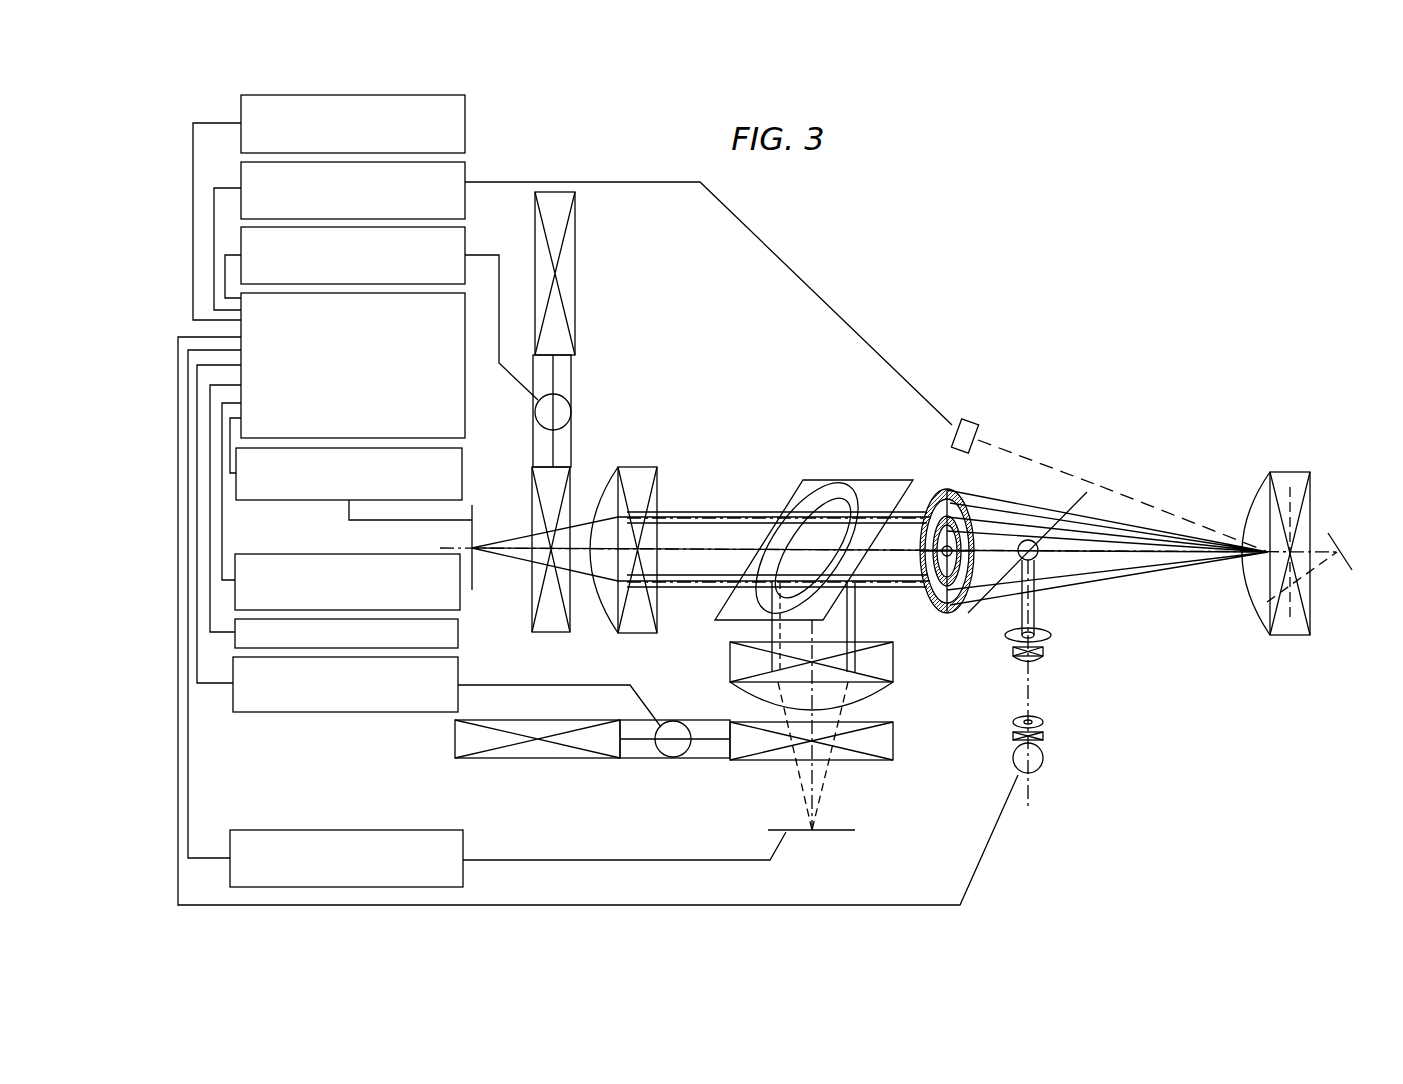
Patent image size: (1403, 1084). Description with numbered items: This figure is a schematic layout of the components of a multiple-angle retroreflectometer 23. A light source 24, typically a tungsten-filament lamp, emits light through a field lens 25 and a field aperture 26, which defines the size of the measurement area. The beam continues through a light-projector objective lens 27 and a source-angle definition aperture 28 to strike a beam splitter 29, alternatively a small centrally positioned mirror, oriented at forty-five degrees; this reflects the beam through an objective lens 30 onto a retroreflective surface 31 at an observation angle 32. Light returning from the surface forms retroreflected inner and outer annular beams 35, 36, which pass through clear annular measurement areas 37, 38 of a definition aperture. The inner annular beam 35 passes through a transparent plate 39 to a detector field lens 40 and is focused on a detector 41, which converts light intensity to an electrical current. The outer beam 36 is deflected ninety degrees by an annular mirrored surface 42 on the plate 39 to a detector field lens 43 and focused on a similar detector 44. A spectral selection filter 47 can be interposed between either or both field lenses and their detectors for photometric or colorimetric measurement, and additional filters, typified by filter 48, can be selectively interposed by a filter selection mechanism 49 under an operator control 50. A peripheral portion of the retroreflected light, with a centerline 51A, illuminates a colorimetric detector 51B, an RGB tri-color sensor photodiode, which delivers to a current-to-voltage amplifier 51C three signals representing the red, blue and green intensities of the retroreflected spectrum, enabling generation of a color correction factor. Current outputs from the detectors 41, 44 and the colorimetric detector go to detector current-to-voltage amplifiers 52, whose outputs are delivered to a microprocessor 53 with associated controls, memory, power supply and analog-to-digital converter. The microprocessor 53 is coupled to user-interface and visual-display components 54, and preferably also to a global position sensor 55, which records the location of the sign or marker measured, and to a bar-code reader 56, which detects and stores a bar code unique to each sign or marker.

The multiple-angle retroreflectometer 23 is at (935, 350).
The light source 24 is at (1045, 760).
The field lens 25 is at (1045, 736).
The field aperture 26 is at (1045, 720).
The light-projector objective lens 27 is at (1043, 658).
The source-angle definition aperture 28 is at (1052, 635).
The beam splitter 29 is at (1093, 485).
The objective lens 30 is at (1317, 487).
The retroreflective surface 31 is at (1330, 533).
The observation angle 32 is at (1277, 573).
The inner annular beam 35 is at (683, 508).
The outer annular beam 36 is at (1157, 527).
The clear annular measurement area 37 is at (953, 492).
The clear annular measurement area 38 is at (1003, 500).
The transparent plate 39 is at (825, 480).
The detector field lens 40 is at (640, 468).
The detector 41 is at (472, 578).
The annular mirrored surface 42 is at (835, 495).
The detector field lens 43 is at (893, 660).
The detector 44 is at (830, 832).
The spectral selection filter 47 is at (590, 470).
The filter 48 is at (575, 272).
The filter selection mechanism 49 is at (565, 398).
The operator control 50 is at (465, 241).
The centerline 51A is at (1013, 453).
The colorimetric detector 51B is at (970, 420).
The current-to-voltage amplifier 51C is at (465, 160).
The detector current-to-voltage amplifiers 52 is at (462, 478).
The microprocessor 53 is at (462, 412).
The user-interface and visual-display components 54 is at (465, 123).
The global position sensor 55 is at (395, 553).
The bar-code reader 56 is at (458, 634).